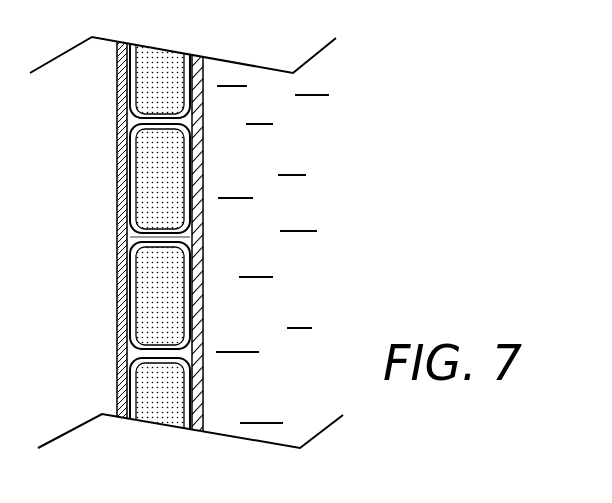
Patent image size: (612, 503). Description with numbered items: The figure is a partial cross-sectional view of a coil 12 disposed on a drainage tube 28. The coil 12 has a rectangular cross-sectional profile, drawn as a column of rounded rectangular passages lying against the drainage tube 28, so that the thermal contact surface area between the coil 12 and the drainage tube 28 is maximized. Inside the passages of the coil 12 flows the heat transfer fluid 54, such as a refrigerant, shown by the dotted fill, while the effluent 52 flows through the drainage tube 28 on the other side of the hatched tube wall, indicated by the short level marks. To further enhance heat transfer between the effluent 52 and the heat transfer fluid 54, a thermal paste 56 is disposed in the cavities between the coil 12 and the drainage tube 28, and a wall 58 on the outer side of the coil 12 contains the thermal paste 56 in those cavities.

The coil 12 is at (134, 152).
The drainage tube 28 is at (202, 398).
The effluent 52 is at (308, 204).
The heat transfer fluid 54 is at (153, 190).
The thermal paste 56 is at (190, 237).
The wall which contains thermal paste 58 is at (117, 348).